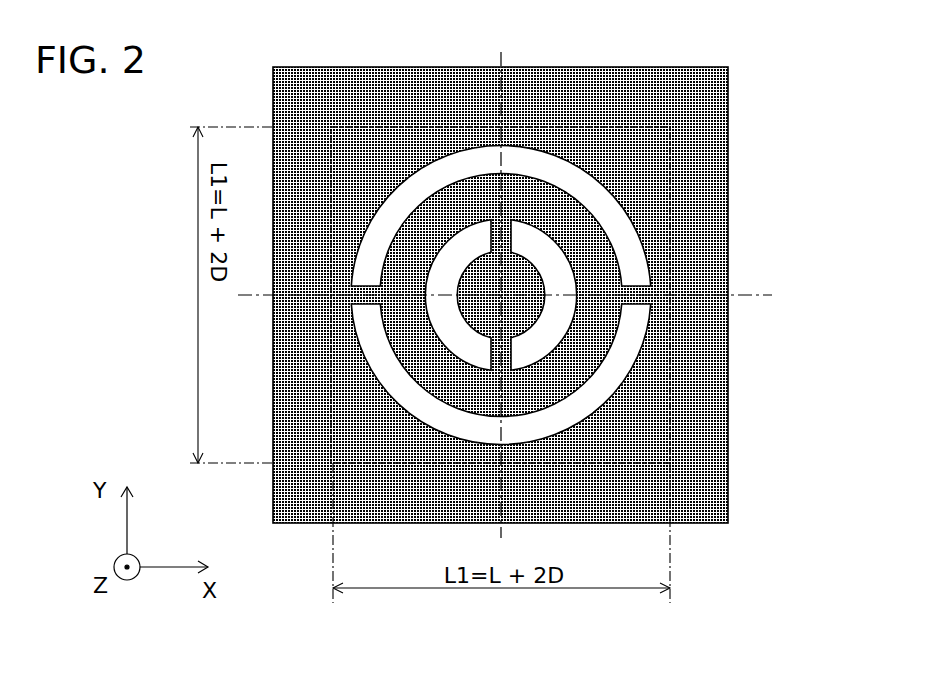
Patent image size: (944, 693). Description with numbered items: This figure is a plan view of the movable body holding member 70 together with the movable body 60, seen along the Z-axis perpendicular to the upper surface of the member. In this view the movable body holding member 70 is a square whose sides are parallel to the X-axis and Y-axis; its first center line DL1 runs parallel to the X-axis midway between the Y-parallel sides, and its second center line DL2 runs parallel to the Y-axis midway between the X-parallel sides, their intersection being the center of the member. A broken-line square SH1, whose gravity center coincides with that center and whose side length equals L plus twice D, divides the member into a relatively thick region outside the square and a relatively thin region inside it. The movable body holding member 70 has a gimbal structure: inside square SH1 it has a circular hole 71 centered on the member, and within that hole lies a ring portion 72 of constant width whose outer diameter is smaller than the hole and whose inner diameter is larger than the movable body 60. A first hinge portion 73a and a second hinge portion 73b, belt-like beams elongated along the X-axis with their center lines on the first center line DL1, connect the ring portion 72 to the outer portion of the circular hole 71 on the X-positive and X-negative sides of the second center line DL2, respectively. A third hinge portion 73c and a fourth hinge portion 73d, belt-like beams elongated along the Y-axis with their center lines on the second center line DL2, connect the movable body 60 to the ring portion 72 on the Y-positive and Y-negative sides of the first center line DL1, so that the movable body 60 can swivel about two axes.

The movable body 60 is at (548, 270).
The movable body holding member 70 is at (730, 188).
The circular hole 71 is at (629, 361).
The ring portion 72 is at (574, 393).
The first hinge portion 73a is at (638, 311).
The second hinge portion 73b is at (357, 312).
The third hinge portion 73c is at (484, 236).
The fourth hinge portion 73d is at (512, 352).
The square SH1 is at (676, 150).
The first center line DL1 is at (532, 294).
The second center line DL2 is at (501, 281).